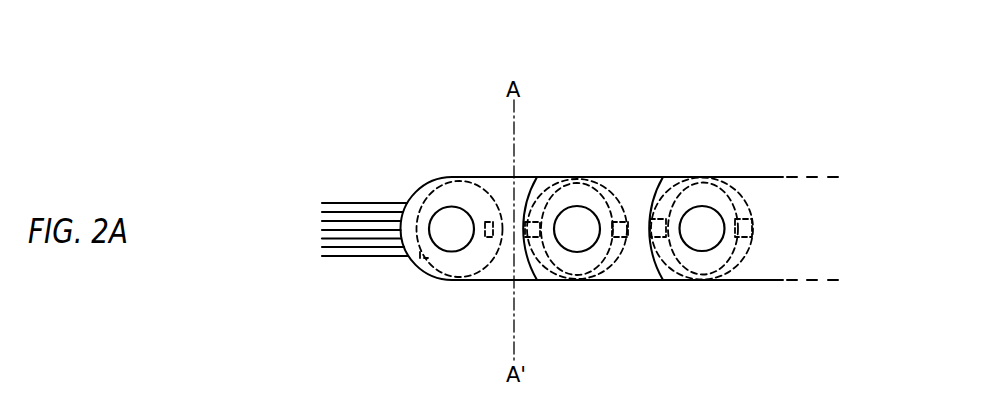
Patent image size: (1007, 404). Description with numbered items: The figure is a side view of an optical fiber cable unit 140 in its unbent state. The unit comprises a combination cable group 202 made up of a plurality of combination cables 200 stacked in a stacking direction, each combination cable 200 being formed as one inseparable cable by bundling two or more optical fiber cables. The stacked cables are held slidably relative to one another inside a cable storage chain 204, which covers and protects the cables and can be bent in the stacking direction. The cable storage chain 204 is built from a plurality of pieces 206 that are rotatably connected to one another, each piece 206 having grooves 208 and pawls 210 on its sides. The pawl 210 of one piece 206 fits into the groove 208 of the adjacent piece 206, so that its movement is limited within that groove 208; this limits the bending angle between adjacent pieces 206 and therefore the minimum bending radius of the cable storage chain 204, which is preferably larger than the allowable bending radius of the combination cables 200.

The optical fiber cable unit 140 is at (822, 41).
The combination cable 200 is at (327, 208).
The combination cable group 202 is at (248, 195).
The cable storage chain 204 is at (803, 133).
The piece 206 is at (528, 177).
The groove 208 is at (418, 250).
The pawl 210 is at (492, 236).